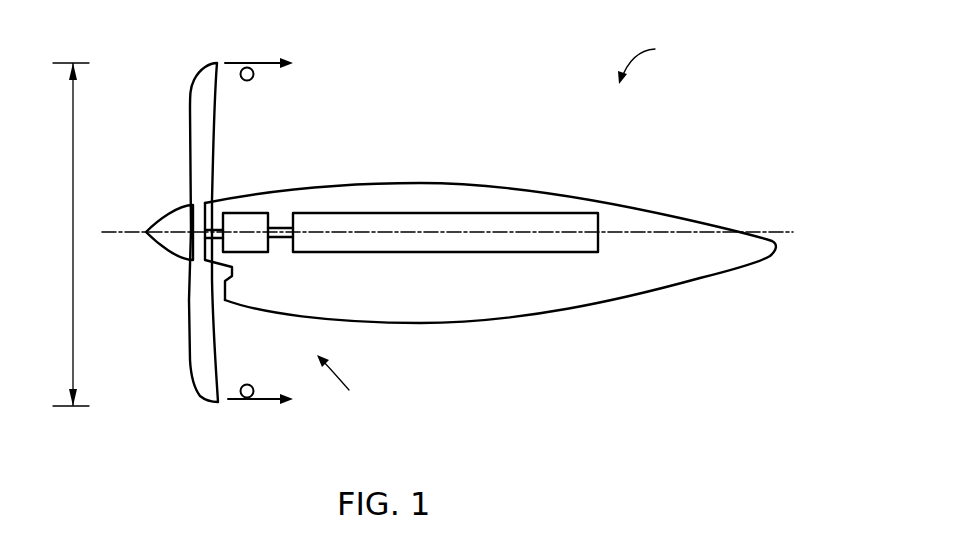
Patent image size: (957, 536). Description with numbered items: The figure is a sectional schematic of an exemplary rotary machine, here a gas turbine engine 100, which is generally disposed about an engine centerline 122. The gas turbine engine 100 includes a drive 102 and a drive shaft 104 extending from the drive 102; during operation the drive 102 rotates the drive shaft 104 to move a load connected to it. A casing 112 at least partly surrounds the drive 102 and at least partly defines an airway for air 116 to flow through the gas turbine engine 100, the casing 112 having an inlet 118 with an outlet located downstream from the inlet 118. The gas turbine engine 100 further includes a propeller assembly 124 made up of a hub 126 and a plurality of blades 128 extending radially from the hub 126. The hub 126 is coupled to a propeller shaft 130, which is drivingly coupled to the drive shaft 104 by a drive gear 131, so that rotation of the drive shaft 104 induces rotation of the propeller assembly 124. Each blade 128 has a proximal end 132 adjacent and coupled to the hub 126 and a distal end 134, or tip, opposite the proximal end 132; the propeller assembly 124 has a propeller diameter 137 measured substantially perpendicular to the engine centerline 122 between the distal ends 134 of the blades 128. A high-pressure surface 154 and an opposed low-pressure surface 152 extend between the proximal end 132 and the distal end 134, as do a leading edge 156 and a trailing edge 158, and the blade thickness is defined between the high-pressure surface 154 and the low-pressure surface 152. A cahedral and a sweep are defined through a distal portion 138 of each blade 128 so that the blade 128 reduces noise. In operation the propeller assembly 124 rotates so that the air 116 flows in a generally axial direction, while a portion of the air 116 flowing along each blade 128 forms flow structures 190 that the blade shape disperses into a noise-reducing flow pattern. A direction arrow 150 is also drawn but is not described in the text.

The gas turbine engine 100 is at (656, 60).
The drive 102 is at (382, 212).
The drive shaft 104 is at (279, 226).
The casing 112 is at (530, 318).
The air 116 is at (286, 60).
The inlet 118 is at (223, 302).
The engine centerline 122 is at (705, 230).
The propeller assembly 124 is at (203, 82).
The hub 126 is at (165, 222).
The blades 128 is at (198, 134).
The propeller shaft 130 is at (219, 251).
The drive gear 131 is at (245, 253).
The proximal end 132 is at (190, 198).
The distal end 134 is at (215, 62).
The propeller diameter 137 is at (72, 235).
The distal portion 138 is at (203, 106).
The exhaust flow direction 150 is at (352, 378).
The low-pressure surface 152 is at (191, 304).
The high-pressure surface 154 is at (213, 185).
The leading edge 156 is at (190, 149).
The trailing edge 158 is at (208, 150).
The flow structures 190 is at (253, 78).